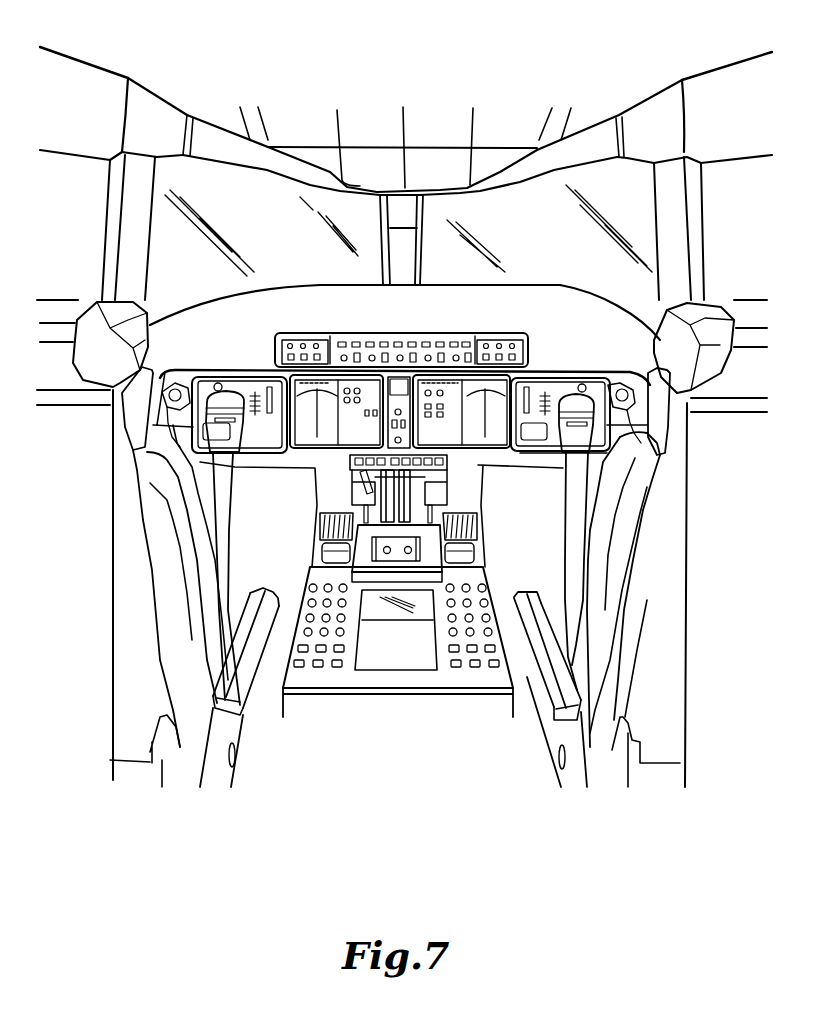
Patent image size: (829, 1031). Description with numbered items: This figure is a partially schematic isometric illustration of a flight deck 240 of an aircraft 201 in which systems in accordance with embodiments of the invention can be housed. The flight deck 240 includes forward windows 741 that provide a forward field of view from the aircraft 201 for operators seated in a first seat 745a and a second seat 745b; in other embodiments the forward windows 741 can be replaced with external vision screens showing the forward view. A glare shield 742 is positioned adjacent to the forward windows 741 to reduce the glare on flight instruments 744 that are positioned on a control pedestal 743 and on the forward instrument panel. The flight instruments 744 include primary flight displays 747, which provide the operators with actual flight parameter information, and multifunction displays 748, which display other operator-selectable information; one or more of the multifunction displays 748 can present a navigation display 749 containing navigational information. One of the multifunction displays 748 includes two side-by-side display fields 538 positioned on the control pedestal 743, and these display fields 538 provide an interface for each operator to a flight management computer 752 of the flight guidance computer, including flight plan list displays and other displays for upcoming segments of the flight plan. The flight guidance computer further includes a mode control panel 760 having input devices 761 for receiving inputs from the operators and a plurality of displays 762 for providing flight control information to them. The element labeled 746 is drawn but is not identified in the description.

The aircraft 201 is at (687, 80).
The flight deck 240 is at (502, 830).
The side-by-side display fields 538 is at (487, 513).
The forward windows 741 is at (275, 202).
The glare shield 742 is at (577, 305).
The control pedestal 743 is at (410, 718).
The flight instruments 744 is at (253, 313).
The first seat 745a is at (185, 582).
The second seat 745b is at (607, 593).
The glareshield 746 is at (597, 339).
The primary flight displays 747 is at (253, 370).
The multifunction displays 748 is at (442, 483).
The navigation display 749 is at (282, 370).
The flight management computer 752 is at (511, 582).
The mode control panel 760 is at (407, 328).
The input devices 761 is at (490, 335).
The displays 762 is at (357, 335).